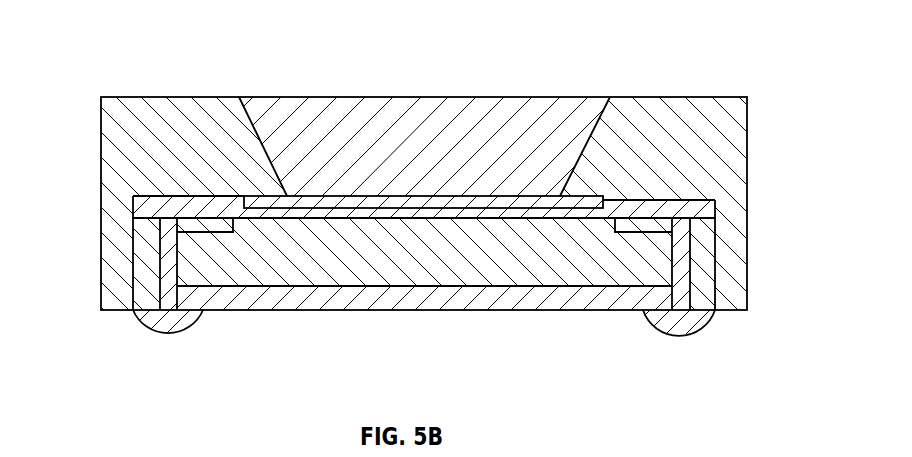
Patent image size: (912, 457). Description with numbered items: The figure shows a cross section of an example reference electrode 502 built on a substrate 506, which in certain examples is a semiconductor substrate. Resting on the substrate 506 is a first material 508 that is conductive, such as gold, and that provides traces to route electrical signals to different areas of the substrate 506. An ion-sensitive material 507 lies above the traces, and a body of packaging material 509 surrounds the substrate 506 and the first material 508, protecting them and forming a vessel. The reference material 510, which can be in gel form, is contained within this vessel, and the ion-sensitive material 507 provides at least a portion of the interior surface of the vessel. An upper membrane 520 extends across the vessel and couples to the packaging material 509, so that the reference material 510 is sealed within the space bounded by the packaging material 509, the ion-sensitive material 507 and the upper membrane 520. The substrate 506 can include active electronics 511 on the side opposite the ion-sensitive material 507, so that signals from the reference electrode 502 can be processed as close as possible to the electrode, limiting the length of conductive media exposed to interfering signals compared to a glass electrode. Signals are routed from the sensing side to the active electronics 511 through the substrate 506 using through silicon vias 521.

The reference electrode 502 is at (556, 66).
The substrate 506 is at (137, 311).
The ion-sensitive material 507 is at (470, 195).
The first material 508 is at (133, 198).
The packaging material 509 is at (163, 96).
The reference material 510 is at (540, 112).
The active electronics 511 is at (403, 312).
The upper membrane 520 is at (300, 97).
The through silicon vias 521 is at (680, 283).